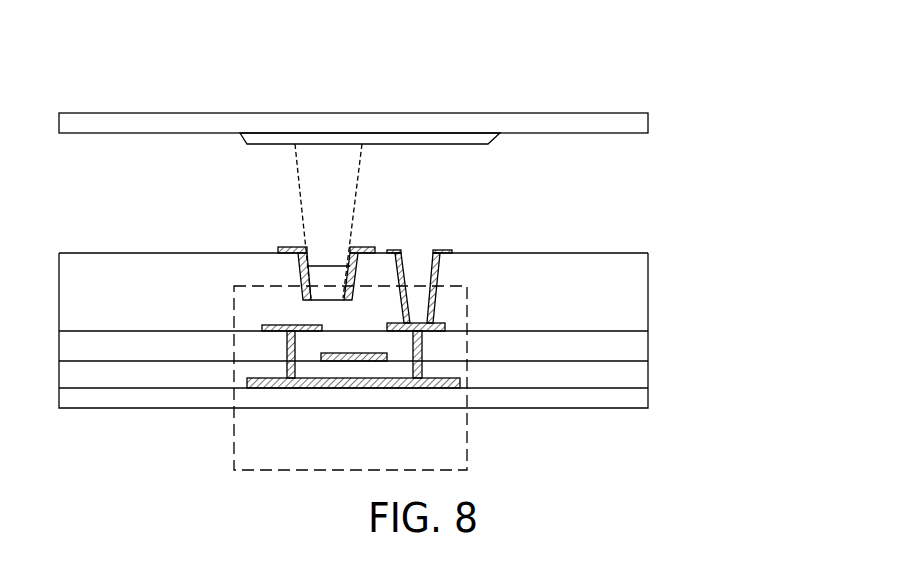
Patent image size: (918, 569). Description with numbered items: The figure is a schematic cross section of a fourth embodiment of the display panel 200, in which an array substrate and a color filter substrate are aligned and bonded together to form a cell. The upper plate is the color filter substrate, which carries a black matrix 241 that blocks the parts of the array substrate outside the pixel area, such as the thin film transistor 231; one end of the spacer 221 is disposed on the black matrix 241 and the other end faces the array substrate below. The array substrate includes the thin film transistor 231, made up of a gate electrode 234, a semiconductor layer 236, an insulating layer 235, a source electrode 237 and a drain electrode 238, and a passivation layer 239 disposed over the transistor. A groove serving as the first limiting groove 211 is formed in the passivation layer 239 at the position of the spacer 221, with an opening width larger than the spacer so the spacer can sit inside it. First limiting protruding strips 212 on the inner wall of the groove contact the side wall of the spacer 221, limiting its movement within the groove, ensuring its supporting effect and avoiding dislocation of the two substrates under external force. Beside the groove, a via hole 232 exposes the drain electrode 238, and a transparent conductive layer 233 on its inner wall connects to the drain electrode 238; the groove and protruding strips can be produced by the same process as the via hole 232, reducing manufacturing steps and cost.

The display panel 200 is at (138, 42).
The first limiting groove 211 is at (338, 278).
The first limiting protruding strip 212 is at (325, 278).
The spacer 221 is at (338, 192).
The thin film transistor 231 is at (467, 383).
The via hole 232 is at (420, 263).
The transparent conductive layer 233 is at (442, 262).
The gate electrode 234 is at (348, 362).
The insulating layer 235 is at (623, 348).
The semiconductor layer 236 is at (373, 390).
The source electrode 237 is at (285, 363).
The drain electrode 238 is at (415, 387).
The passivation layer 239 is at (622, 283).
The black matrix 241 is at (477, 137).